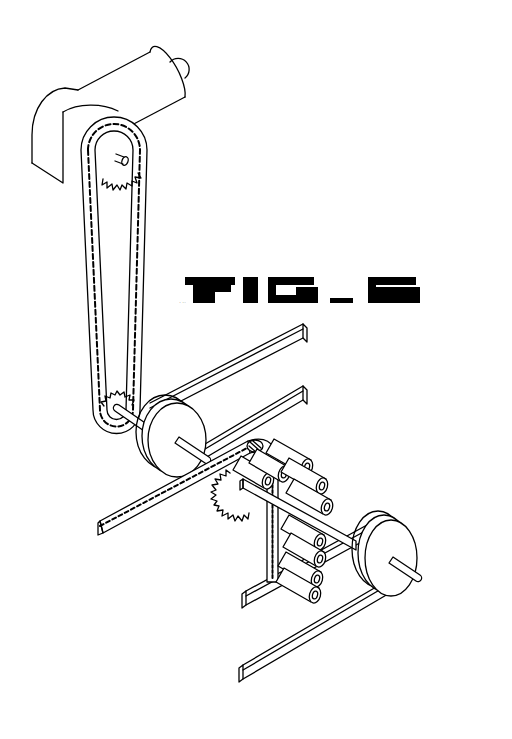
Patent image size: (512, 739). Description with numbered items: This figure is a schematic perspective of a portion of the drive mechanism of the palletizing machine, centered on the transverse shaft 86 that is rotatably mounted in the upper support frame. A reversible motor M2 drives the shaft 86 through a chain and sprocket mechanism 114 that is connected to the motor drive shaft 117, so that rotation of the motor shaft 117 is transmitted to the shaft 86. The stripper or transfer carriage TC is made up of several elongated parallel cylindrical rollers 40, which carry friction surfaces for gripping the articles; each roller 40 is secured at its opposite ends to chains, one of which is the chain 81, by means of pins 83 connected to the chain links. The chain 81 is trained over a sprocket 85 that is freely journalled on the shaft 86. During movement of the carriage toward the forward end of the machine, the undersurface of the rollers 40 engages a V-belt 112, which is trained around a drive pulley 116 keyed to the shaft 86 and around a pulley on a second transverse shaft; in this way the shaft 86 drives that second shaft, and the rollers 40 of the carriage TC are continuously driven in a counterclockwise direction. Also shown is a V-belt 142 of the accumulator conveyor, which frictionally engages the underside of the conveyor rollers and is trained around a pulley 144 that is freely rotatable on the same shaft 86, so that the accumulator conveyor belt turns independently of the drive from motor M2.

The reversible motor M2 is at (160, 98).
The motor drive shaft 117 is at (128, 162).
The chain and sprocket mechanism 114 is at (140, 242).
The V-belt 142 is at (300, 383).
The pulley 144 is at (157, 449).
The pins 83 is at (262, 443).
The transfer carriage TC is at (304, 513).
The rollers 40 is at (323, 489).
The transverse shaft 86 is at (333, 527).
The drive pulley 116 is at (408, 538).
The chain 81 is at (167, 500).
The sprocket 85 is at (231, 513).
The V-belt 112 is at (283, 644).